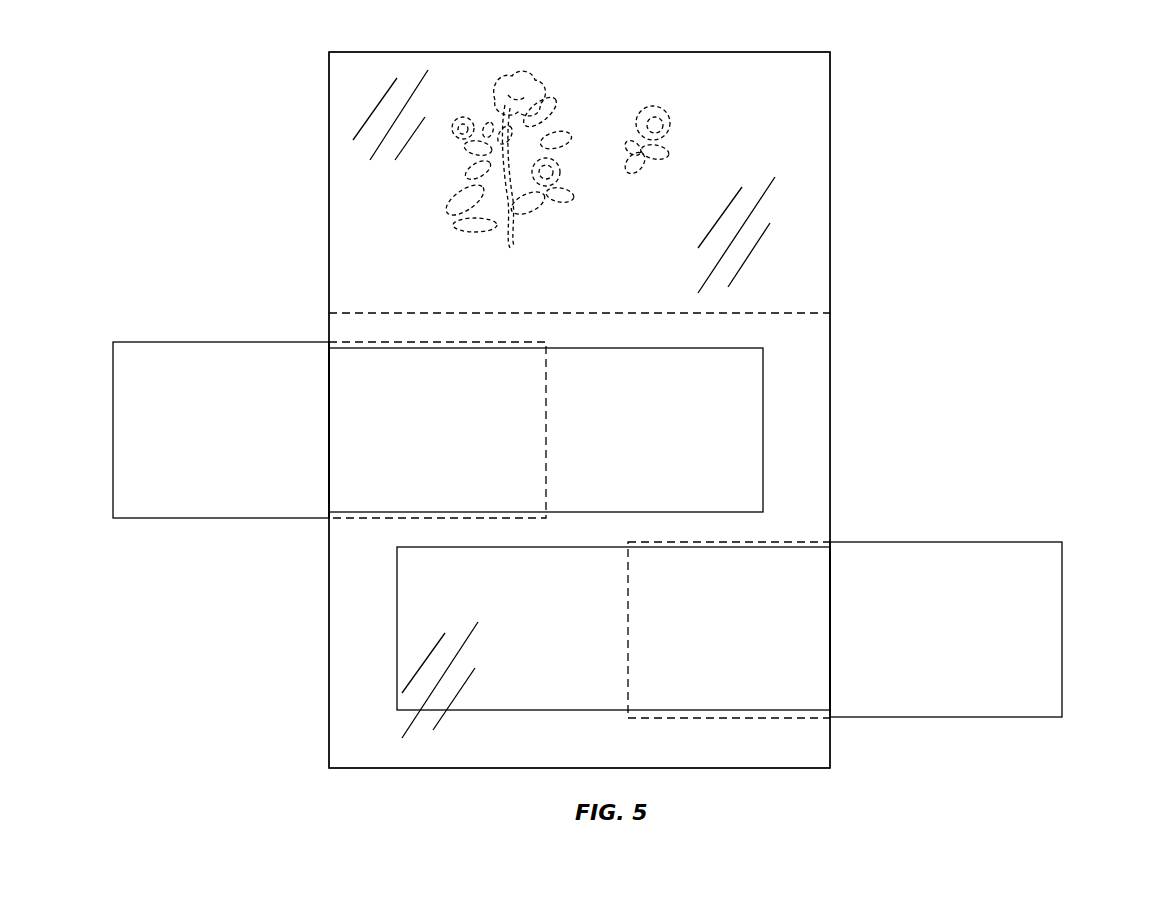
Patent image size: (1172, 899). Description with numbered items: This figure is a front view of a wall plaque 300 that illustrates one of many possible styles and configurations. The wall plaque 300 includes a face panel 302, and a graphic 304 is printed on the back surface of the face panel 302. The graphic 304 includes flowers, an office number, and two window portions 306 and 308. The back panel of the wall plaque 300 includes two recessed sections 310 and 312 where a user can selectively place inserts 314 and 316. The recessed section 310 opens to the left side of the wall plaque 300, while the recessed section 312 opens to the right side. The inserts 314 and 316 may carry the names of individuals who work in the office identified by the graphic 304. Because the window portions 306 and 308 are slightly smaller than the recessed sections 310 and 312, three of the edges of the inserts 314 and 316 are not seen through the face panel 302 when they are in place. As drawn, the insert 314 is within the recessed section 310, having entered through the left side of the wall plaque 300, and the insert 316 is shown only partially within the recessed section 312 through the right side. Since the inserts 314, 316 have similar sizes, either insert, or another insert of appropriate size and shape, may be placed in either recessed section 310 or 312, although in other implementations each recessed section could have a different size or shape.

The wall plaque 300 is at (878, 70).
The face panel 302 is at (813, 116).
The graphic 304 is at (500, 72).
The window portion 306 is at (763, 413).
The window portion 308 is at (397, 630).
The recessed section 310 is at (688, 385).
The recessed section 312 is at (452, 592).
The insert 314 is at (167, 358).
The insert 316 is at (1053, 625).